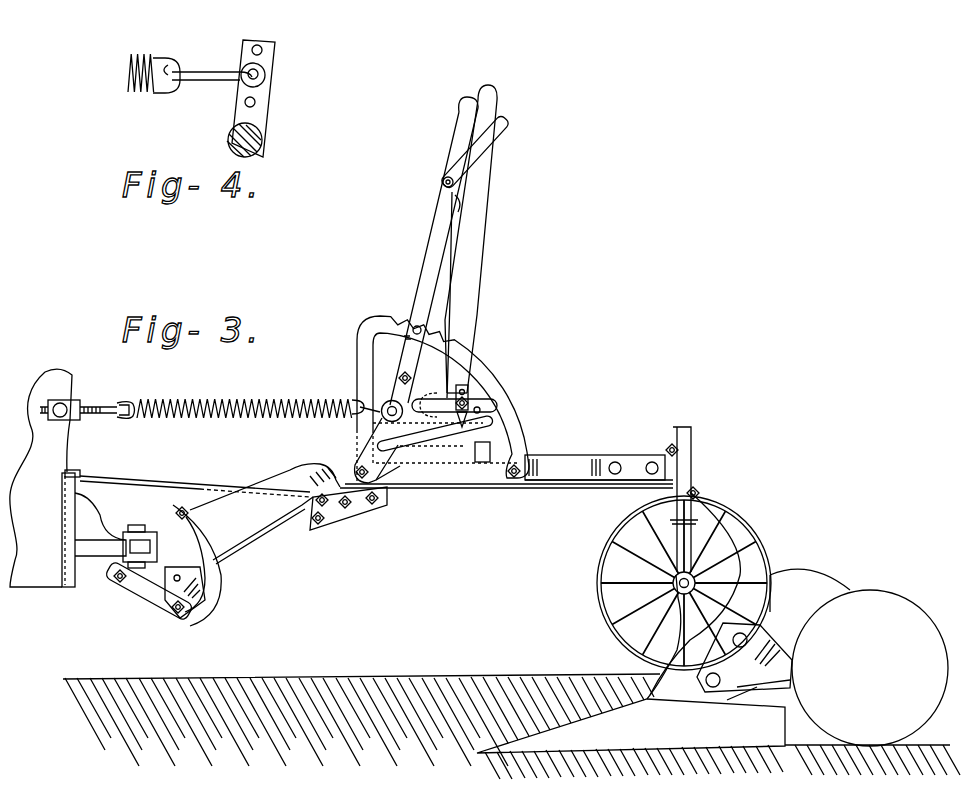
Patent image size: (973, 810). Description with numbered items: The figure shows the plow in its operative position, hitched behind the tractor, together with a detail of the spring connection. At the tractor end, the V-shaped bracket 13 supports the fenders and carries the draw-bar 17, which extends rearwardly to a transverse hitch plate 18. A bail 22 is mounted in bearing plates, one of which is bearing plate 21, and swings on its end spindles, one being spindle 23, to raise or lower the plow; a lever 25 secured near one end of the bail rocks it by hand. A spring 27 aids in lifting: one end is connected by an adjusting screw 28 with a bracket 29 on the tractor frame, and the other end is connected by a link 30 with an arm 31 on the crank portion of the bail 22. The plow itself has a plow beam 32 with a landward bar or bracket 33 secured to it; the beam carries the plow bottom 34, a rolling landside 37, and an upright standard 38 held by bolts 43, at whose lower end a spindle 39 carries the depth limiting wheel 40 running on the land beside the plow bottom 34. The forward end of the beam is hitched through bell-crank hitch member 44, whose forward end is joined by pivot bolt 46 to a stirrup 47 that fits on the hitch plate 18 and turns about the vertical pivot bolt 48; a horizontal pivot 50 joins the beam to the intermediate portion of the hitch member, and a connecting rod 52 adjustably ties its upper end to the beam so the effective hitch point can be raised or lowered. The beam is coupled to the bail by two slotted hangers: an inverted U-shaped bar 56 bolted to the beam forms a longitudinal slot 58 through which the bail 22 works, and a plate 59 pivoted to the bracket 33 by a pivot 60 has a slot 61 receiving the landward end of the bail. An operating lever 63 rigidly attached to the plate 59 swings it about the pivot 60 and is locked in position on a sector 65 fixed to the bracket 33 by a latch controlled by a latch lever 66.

In FIG. 3, the V-shaped bracket 13 is at (280, 528).
In FIG. 3, the draw-bar 17 is at (82, 542).
In FIG. 3, the hitch plate 18 is at (122, 540).
In FIG. 3, the bearing plate 21 is at (340, 512).
In FIG. 4, the bail 22 is at (262, 138).
In FIG. 3, the bail 22 is at (455, 452).
In FIG. 3, the spindle 23 is at (392, 400).
In FIG. 3, the lever 25 is at (471, 238).
In FIG. 4, the spring 27 is at (136, 56).
In FIG. 3, the spring 27 is at (264, 400).
In FIG. 3, the adjusting screw 28 is at (107, 410).
In FIG. 3, the bracket 29 is at (66, 403).
In FIG. 4, the link 30 is at (190, 68).
In FIG. 3, the link 30 is at (440, 403).
In FIG. 4, the arm 31 is at (262, 100).
In FIG. 3, the arm 31 is at (464, 390).
In FIG. 3, the plow beam 32 is at (557, 489).
In FIG. 3, the bar or bracket 33 is at (567, 465).
In FIG. 3, the plow bottom 34 is at (788, 587).
In FIG. 3, the rolling landside 37 is at (860, 622).
In FIG. 3, the upright standard 38 is at (678, 430).
In FIG. 3, the spindle 39 is at (672, 586).
In FIG. 3, the depth limiting wheel 40 is at (597, 575).
In FIG. 3, the bolts 43 is at (697, 492).
In FIG. 3, the hitch member 44 is at (210, 583).
In FIG. 3, the pivot bolt 46 is at (119, 582).
In FIG. 3, the stirrup 47 is at (150, 552).
In FIG. 3, the pivot bolt 48 is at (139, 530).
In FIG. 3, the horizontal pivot 50 is at (180, 616).
In FIG. 3, the connecting rod 52 is at (242, 505).
In FIG. 3, the inverted U-shaped bar 56 is at (481, 407).
In FIG. 3, the longitudinal slot 58 is at (478, 462).
In FIG. 3, the plate 59 is at (400, 458).
In FIG. 3, the pivot 60 is at (356, 468).
In FIG. 3, the slot 61 is at (420, 440).
In FIG. 3, the operating lever 63 is at (432, 253).
In FIG. 3, the sector 65 is at (493, 387).
In FIG. 3, the latch lever 66 is at (490, 145).